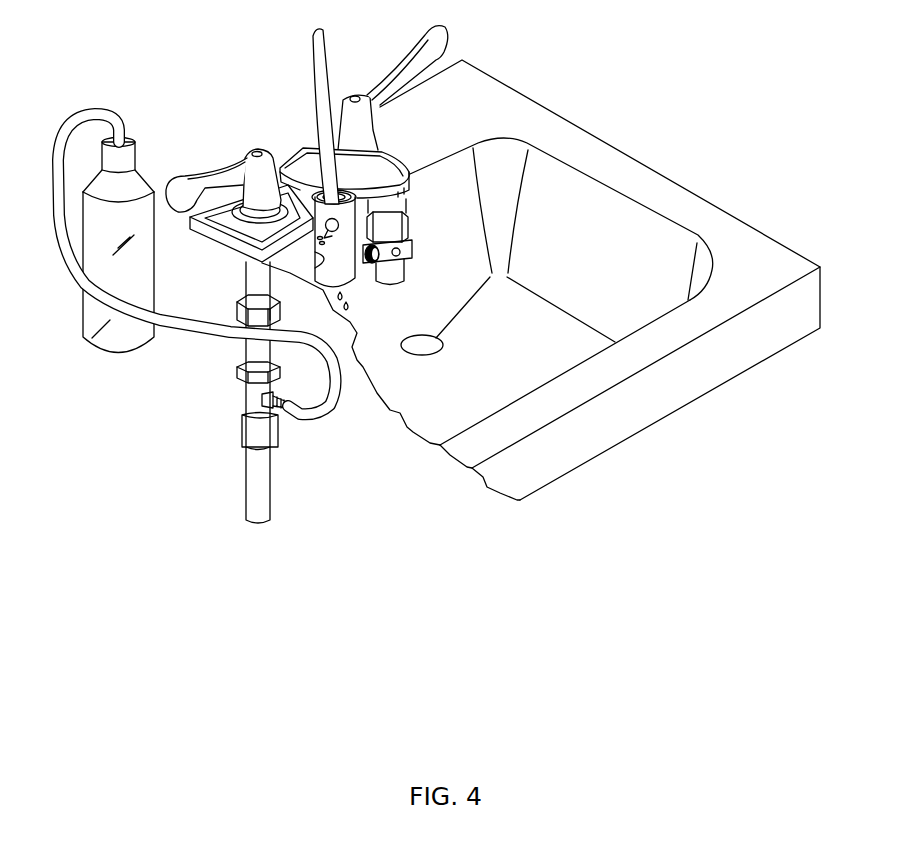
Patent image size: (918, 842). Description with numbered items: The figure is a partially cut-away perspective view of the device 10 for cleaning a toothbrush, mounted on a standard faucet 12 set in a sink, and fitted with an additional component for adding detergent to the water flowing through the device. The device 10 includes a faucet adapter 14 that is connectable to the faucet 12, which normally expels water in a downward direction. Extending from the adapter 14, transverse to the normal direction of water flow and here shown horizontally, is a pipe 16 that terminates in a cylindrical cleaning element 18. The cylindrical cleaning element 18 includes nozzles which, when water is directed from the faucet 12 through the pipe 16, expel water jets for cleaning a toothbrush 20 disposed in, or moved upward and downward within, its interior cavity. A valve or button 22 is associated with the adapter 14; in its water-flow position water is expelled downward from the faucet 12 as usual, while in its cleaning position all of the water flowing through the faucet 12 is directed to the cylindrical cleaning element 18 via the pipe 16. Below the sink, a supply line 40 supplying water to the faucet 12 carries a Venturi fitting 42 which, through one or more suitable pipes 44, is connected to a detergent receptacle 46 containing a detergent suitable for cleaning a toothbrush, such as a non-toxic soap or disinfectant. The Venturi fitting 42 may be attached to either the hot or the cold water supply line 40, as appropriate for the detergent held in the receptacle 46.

The device for cleaning a toothbrush 10 is at (417, 238).
The faucet 12 is at (305, 157).
The faucet adapter 14 is at (407, 229).
The pipe 16 is at (368, 262).
The cylindrical cleaning element 18 is at (346, 270).
The toothbrush 20 is at (318, 82).
The valve or button 22 is at (398, 256).
The supply line 40 is at (263, 475).
The Venturi fitting 42 is at (248, 392).
The pipes 44 is at (183, 328).
The detergent receptacle 46 is at (106, 343).